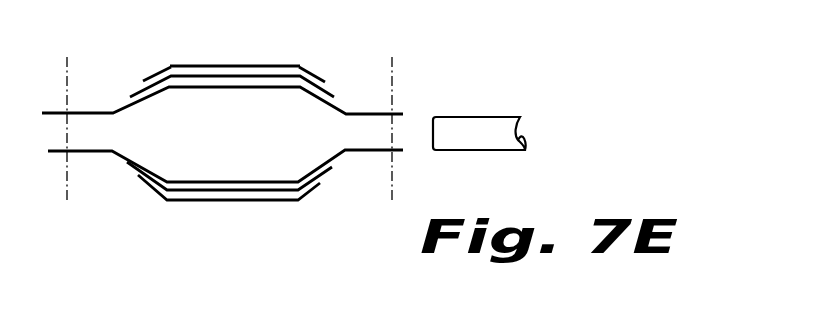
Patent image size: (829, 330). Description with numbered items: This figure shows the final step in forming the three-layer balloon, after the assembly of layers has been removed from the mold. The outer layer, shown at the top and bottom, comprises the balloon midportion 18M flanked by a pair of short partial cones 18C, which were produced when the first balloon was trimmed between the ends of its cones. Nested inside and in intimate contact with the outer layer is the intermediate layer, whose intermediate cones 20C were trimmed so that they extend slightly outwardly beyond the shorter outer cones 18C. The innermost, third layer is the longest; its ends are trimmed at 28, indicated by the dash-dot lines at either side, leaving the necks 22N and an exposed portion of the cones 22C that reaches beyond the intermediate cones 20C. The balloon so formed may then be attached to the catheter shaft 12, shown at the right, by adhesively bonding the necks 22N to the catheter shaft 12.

The catheter shaft 12 is at (492, 144).
The partial cones 18C is at (146, 79).
The balloon midportion 18M is at (222, 65).
The intermediate cones 20C is at (131, 95).
The cones of the inner layer 22C is at (129, 160).
The necks 22N is at (78, 150).
The trim location of inner layer 28 is at (66, 78).